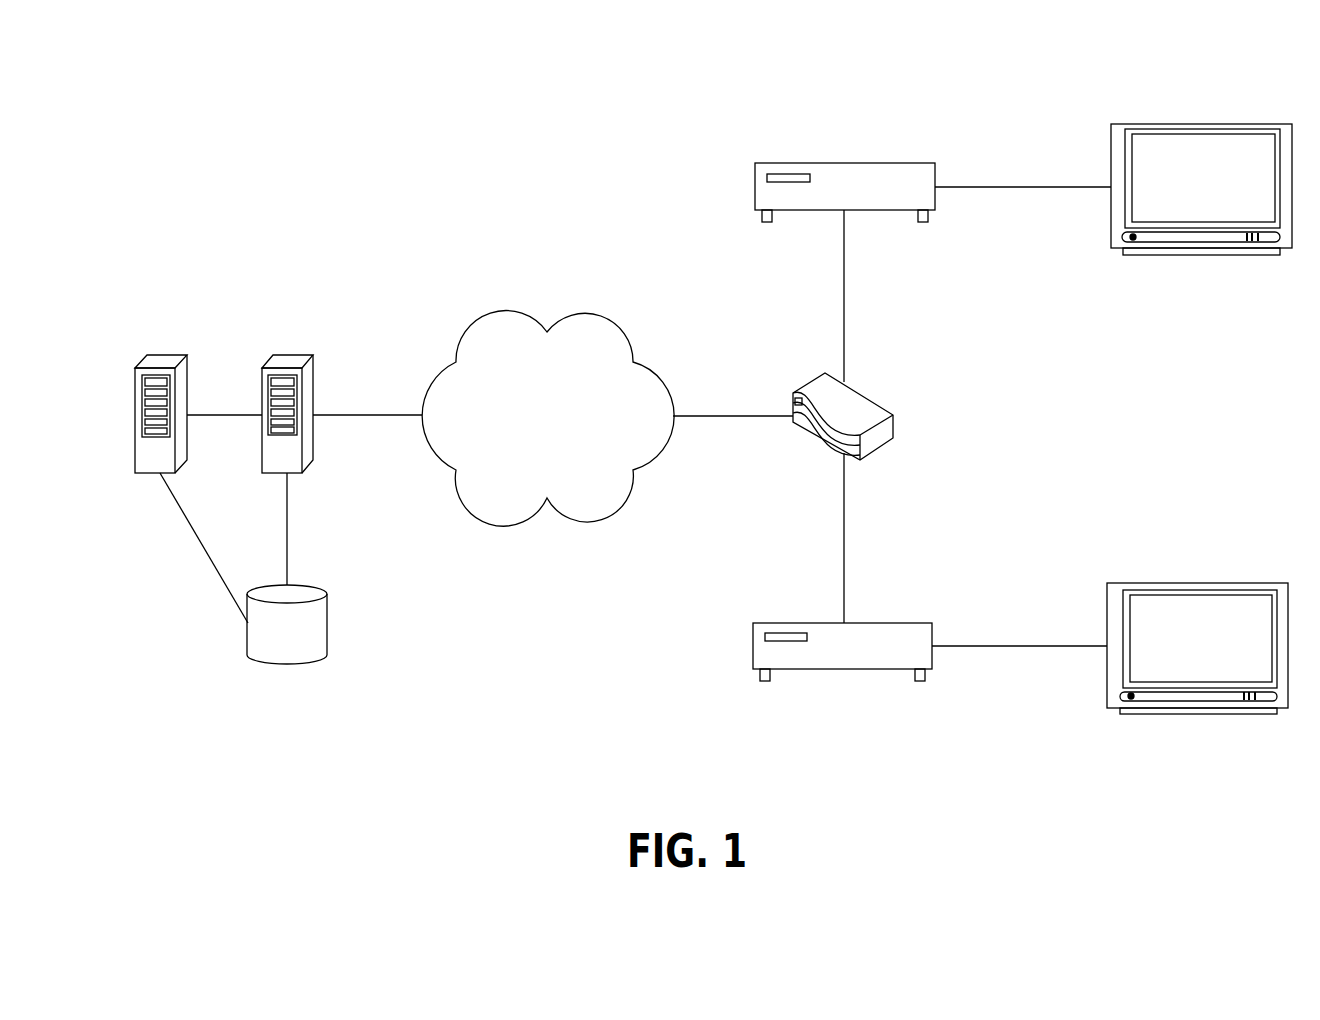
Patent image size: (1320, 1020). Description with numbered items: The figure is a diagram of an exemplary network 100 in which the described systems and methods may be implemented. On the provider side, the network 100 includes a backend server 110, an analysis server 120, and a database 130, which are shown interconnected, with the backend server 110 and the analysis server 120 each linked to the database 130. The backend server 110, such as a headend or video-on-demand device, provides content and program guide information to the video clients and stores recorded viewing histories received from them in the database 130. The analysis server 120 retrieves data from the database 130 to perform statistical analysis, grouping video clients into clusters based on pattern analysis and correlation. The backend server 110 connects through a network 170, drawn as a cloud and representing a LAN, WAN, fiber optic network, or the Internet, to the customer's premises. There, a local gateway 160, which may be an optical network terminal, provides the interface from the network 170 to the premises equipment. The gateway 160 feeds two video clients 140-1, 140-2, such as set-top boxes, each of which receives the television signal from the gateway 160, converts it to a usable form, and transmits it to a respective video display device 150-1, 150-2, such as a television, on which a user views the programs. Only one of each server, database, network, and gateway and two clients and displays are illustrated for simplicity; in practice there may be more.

The network 100 is at (274, 82).
The backend server 110 is at (272, 355).
The analysis server 120 is at (145, 355).
The database 130 is at (327, 587).
The video client 140-1 is at (788, 163).
The video client 140-2 is at (788, 623).
The video display device 150-1 is at (1111, 140).
The video display device 150-2 is at (1107, 600).
The local gateway 160 is at (870, 398).
The network 170 is at (566, 442).